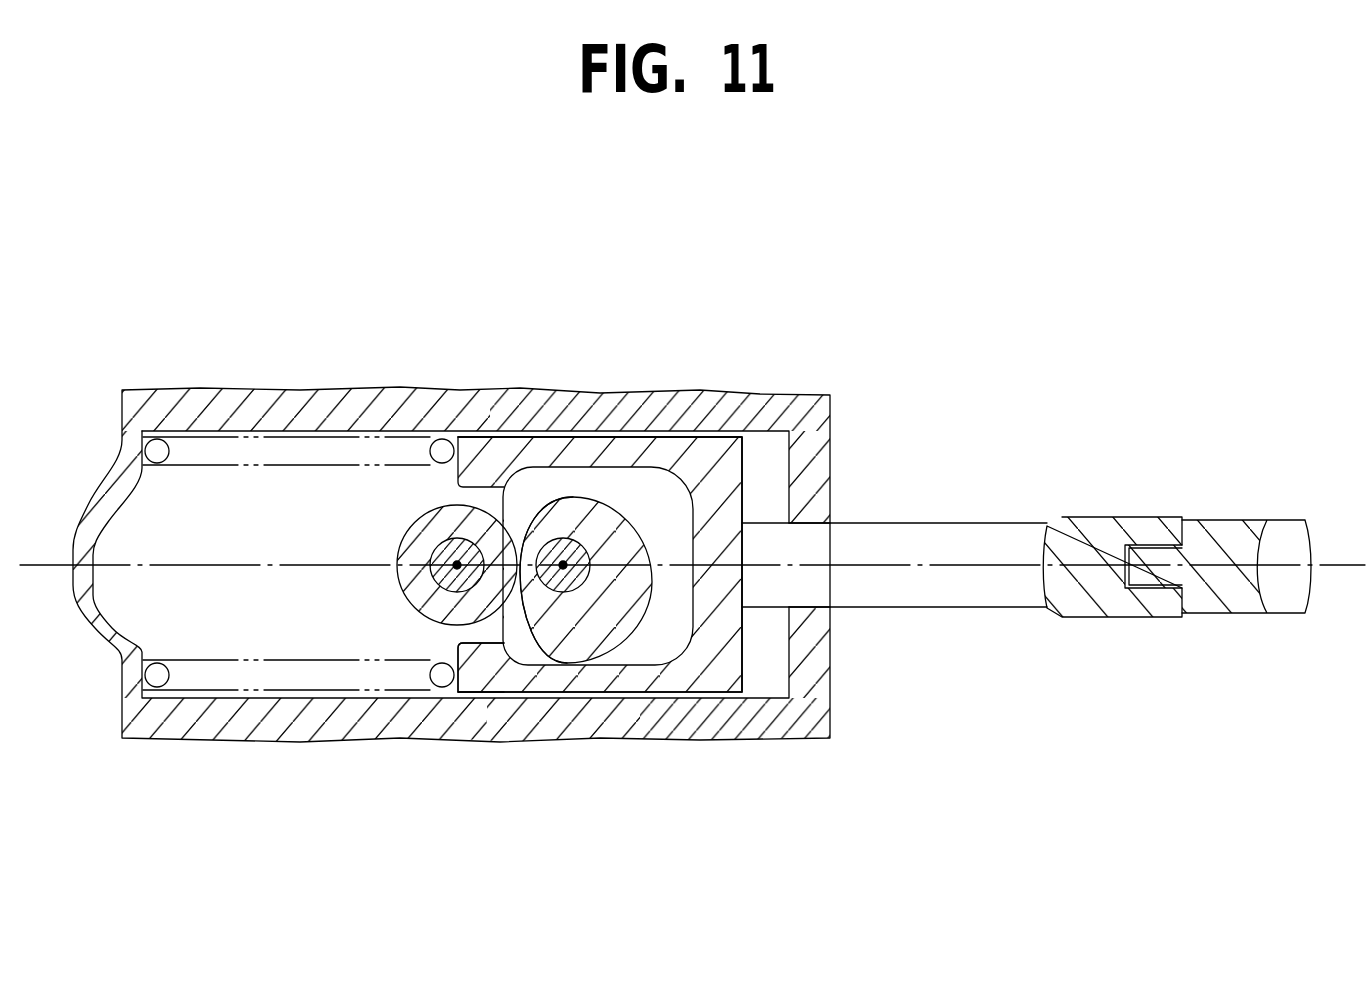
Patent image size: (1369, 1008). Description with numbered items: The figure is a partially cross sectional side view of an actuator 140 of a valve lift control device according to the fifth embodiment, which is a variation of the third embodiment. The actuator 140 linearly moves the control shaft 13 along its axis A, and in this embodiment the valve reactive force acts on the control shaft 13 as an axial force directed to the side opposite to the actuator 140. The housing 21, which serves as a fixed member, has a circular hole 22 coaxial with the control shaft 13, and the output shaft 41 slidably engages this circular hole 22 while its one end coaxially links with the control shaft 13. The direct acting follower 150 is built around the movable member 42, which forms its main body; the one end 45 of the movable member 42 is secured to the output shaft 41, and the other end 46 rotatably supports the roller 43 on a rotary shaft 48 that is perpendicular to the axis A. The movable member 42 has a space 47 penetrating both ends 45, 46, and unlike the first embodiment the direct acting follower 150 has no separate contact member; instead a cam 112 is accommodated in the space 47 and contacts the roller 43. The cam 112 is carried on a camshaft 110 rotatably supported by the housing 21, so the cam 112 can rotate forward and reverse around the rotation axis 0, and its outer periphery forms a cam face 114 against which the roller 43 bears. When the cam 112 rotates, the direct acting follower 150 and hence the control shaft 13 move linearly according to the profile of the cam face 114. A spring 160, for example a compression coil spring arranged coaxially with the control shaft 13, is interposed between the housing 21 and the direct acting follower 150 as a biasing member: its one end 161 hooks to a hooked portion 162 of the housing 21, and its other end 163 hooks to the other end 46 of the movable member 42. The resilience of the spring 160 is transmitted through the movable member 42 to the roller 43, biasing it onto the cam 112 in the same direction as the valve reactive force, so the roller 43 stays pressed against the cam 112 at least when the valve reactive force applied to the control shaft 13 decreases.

The control shaft 13 is at (1285, 540).
The housing 21 is at (157, 742).
The circular hole 22 is at (822, 598).
The output shaft 41 is at (880, 532).
The movable member 42 is at (615, 445).
The roller 43 is at (440, 508).
The one end of the movable member 45 is at (725, 616).
The other end of the movable member 46 is at (468, 648).
The space 47 is at (643, 650).
The rotary shaft 48 is at (452, 596).
The camshaft 110 is at (576, 584).
The cam 112 is at (579, 510).
The cam face 114 is at (543, 508).
The actuator 140 is at (843, 738).
The direct acting follower 150 is at (752, 454).
The spring 160 is at (278, 684).
The one end of the spring 161 is at (170, 682).
The hooked portion 162 is at (157, 441).
The other end of the spring 163 is at (444, 441).
The rotation axis 0 is at (562, 545).
The axis A is at (1352, 560).